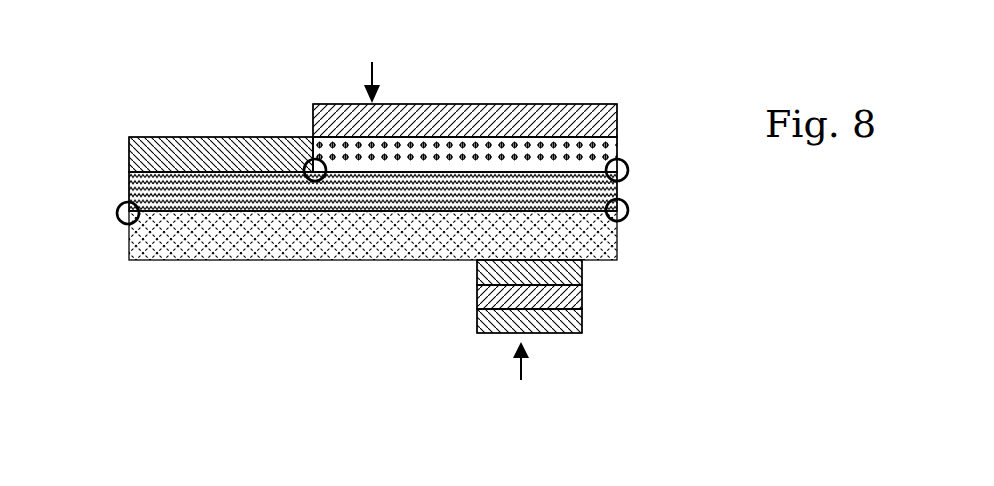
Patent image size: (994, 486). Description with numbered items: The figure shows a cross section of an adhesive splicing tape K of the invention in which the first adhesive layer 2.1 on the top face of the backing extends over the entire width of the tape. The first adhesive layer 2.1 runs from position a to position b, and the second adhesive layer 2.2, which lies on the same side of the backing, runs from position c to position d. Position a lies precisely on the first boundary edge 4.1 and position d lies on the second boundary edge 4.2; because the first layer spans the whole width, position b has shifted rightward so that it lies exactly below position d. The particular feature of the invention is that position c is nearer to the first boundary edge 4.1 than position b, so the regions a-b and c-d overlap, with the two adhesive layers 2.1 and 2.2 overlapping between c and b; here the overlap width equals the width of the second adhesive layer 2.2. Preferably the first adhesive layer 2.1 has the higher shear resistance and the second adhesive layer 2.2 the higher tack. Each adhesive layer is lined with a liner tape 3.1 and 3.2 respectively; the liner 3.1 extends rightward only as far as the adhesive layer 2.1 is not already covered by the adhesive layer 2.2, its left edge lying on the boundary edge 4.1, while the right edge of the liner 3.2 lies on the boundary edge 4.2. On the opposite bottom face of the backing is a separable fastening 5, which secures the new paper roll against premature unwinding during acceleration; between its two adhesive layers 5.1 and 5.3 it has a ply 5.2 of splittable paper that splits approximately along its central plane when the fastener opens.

The liner tape 3.1 is at (150, 157).
The liner tape 3.2 is at (470, 127).
The first adhesive layer 2.1 is at (128, 191).
The second adhesive layer 2.2 is at (617, 150).
The first boundary edge 4.1 is at (128, 247).
The second boundary edge 4.2 is at (617, 240).
The separable fastening 5 is at (521, 373).
The adhesive layer of fastener 5.1 is at (582, 279).
The ply of splittable paper 5.2 is at (477, 296).
The adhesive layer of fastener 5.3 is at (582, 322).
The adhesive splicing tape K is at (370, 64).
The position a is at (117, 214).
The position b is at (628, 210).
The position c is at (304, 168).
The position d is at (628, 168).